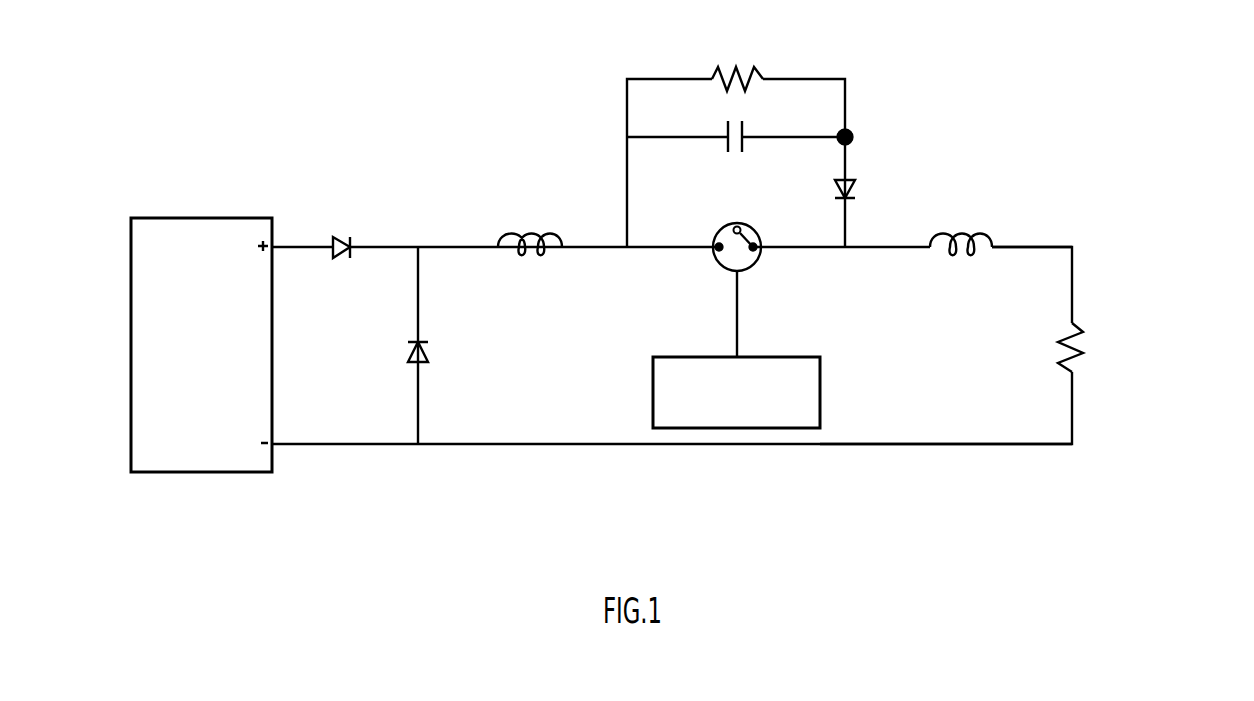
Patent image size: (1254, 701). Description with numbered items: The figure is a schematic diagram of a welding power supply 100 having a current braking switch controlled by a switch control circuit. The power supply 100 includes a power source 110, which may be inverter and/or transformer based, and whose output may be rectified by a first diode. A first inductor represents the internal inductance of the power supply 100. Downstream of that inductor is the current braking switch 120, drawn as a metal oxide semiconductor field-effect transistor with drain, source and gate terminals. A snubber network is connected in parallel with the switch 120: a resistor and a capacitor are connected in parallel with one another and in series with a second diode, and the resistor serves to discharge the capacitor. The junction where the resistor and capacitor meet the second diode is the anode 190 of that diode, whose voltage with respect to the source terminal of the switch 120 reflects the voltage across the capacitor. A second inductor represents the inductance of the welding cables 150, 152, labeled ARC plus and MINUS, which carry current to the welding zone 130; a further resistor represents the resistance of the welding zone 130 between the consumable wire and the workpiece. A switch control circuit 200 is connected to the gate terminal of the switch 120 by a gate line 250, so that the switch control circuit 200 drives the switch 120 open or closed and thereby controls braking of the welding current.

The power supply 100 is at (1008, 93).
The power source 110 is at (178, 218).
The current braking switch 120 is at (757, 262).
The welding zone 130 is at (1060, 350).
The welding cable 150 is at (1002, 244).
The welding cable 152 is at (881, 444).
The anode 190 is at (850, 128).
The switch control circuit 200 is at (820, 404).
The gate line 250 is at (737, 347).